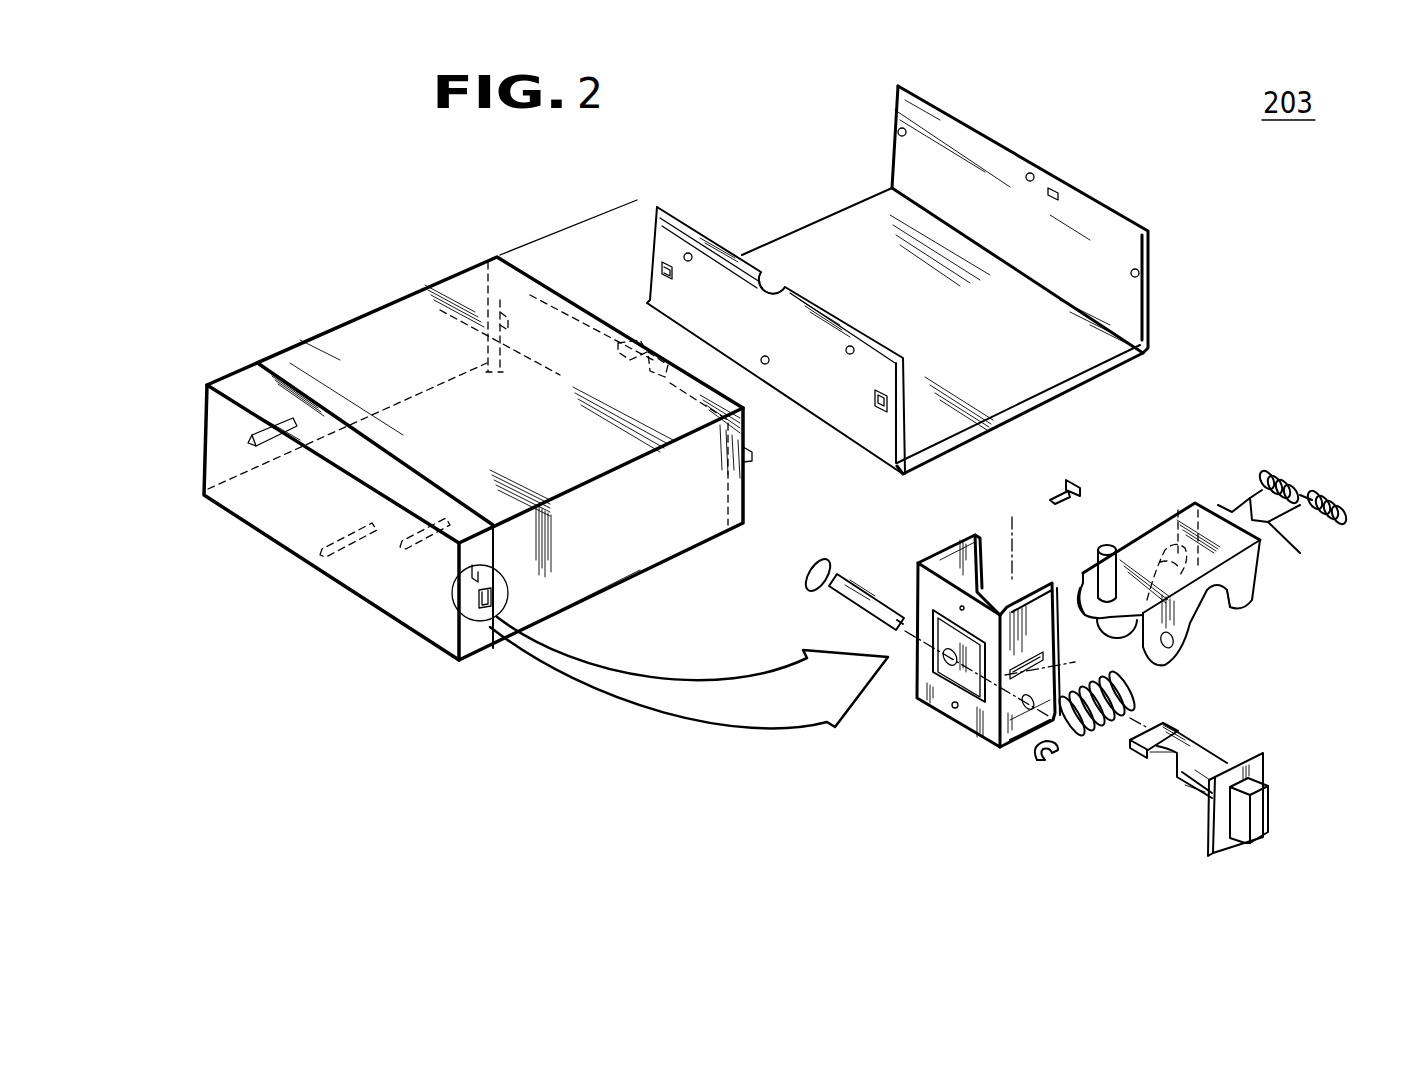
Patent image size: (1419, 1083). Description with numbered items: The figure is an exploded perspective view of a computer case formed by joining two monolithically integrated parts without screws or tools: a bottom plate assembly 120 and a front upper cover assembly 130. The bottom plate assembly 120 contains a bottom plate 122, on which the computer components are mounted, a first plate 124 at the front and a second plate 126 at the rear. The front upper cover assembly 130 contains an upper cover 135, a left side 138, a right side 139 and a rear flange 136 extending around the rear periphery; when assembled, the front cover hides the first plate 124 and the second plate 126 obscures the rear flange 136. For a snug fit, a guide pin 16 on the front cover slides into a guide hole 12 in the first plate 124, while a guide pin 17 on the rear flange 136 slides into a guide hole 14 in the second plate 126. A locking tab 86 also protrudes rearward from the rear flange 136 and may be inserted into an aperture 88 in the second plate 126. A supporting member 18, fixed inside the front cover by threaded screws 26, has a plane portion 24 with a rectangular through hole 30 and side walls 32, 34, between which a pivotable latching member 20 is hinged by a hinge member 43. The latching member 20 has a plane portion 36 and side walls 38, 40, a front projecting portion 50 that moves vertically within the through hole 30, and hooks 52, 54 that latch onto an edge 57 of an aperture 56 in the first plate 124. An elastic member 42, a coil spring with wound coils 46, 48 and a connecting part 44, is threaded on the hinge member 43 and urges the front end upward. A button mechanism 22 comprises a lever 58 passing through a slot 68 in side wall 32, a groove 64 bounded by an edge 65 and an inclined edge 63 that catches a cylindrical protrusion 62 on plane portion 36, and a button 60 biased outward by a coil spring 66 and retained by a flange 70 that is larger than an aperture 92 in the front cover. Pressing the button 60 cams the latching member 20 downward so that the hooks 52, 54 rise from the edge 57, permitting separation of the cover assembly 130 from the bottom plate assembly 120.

The guide hole 12 is at (688, 257).
The guide hole 14 is at (896, 115).
The guide pin 16 is at (283, 423).
The guide pin 17 is at (513, 297).
The supporting member 18 is at (938, 712).
The pivotable latching member 20 is at (1195, 508).
The button mechanism 22 is at (1257, 740).
The plane portion 24 is at (981, 735).
The threaded screw 26 is at (1058, 484).
The rectangular through hole 30 is at (950, 633).
The side wall 32 is at (1047, 610).
The side wall 34 is at (952, 548).
The plane portion 36 is at (1212, 537).
The side wall 38 is at (1178, 627).
The side wall 40 is at (1117, 632).
The elastic member 42 is at (1325, 472).
The hinge member 43 is at (847, 597).
The connecting part 44 is at (1260, 560).
The wound coil 46 is at (1340, 502).
The wound coil 48 is at (1278, 468).
The front projecting portion 50 is at (1090, 607).
The hook 52 is at (1250, 605).
The hook 54 is at (1178, 492).
The aperture 56 is at (877, 398).
The edge 57 is at (885, 410).
The lever 58 is at (1200, 777).
The button 60 is at (1260, 820).
The protrusion 62 is at (1120, 560).
The inclined edge 63 is at (1182, 790).
The groove 64 is at (1147, 760).
The edge 65 is at (1132, 760).
The coil spring 66 is at (1092, 737).
The slot 68 is at (1045, 765).
The flange 70 is at (1260, 770).
The locking tab 86 is at (643, 343).
The aperture 88 is at (1052, 188).
The aperture 92 is at (486, 612).
The bottom plate assembly 120 is at (1170, 285).
The bottom plate 122 is at (837, 193).
The first plate 124 is at (745, 272).
The second plate 126 is at (1058, 213).
The front upper cover assembly 130 is at (292, 578).
The upper cover 135 is at (395, 289).
The rear flange 136 is at (567, 303).
The left side 138 is at (317, 343).
The right side 139 is at (608, 577).